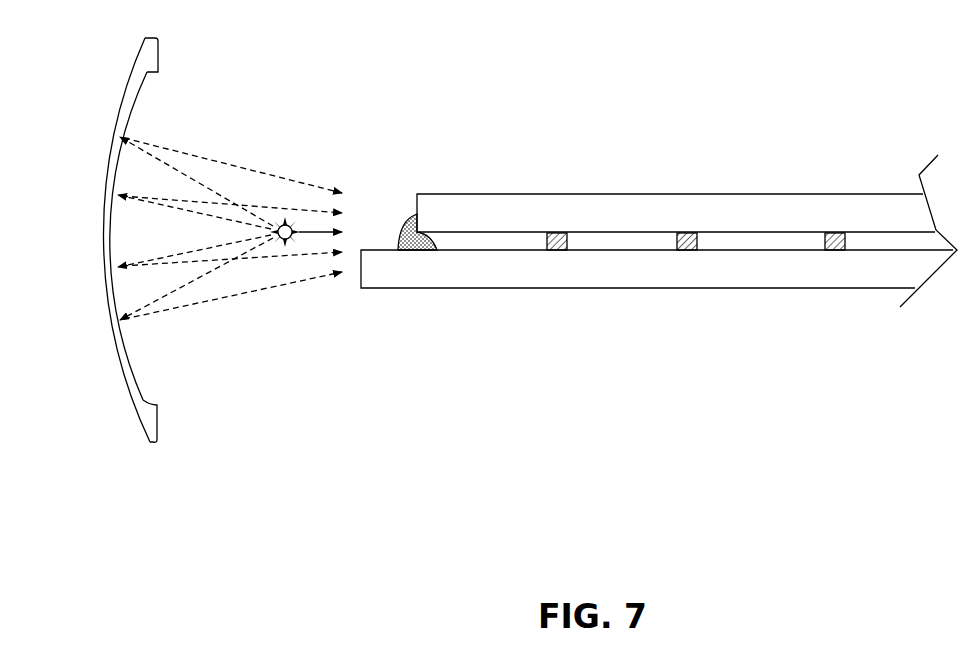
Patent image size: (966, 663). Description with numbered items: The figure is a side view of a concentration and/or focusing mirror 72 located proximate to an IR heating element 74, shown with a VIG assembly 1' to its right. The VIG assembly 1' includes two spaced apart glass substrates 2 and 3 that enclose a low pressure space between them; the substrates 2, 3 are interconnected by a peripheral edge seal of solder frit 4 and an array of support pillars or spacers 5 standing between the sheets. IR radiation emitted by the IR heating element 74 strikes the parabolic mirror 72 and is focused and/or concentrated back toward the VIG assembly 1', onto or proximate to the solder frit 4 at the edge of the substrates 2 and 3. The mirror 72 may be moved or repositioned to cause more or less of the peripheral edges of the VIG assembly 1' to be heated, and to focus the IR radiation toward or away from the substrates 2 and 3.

The VIG assembly 1' is at (533, 157).
The glass substrate 2 is at (650, 288).
The glass substrate 3 is at (677, 194).
The solder frit 4 is at (395, 245).
The spacers 5 is at (542, 238).
The mirror 72 is at (98, 242).
The IR heating element 74 is at (287, 221).